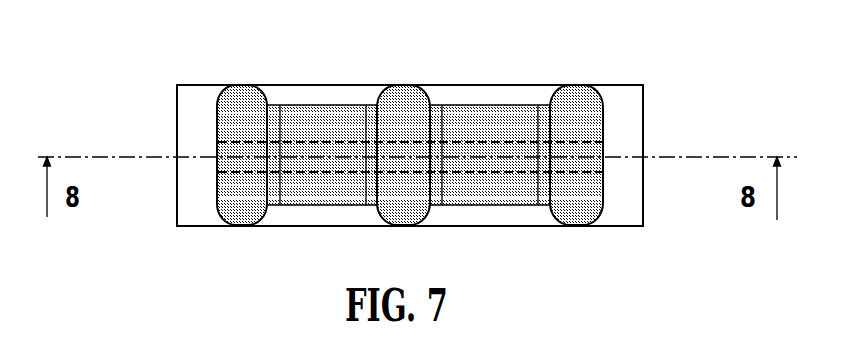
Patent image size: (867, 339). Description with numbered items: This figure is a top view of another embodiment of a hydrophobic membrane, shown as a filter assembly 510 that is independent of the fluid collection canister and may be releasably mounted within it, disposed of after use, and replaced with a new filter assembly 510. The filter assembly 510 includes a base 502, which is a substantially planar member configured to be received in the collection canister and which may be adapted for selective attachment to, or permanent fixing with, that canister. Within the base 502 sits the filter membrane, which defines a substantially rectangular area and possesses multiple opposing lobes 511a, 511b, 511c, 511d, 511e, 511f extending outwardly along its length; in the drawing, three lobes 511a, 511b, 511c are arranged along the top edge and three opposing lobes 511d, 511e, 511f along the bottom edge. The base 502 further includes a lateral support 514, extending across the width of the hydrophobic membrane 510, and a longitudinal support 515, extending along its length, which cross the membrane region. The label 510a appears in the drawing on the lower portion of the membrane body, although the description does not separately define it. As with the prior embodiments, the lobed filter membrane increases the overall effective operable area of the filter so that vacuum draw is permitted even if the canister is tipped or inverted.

The base 502 is at (645, 102).
The filter assembly 510 is at (325, 98).
The core body 510a is at (300, 206).
The lobe 511a is at (237, 92).
The lobe 511b is at (401, 93).
The lobe 511c is at (578, 87).
The lobe 511d is at (237, 223).
The lobe 511e is at (402, 227).
The lobe 511f is at (578, 222).
The lateral support 514 is at (442, 118).
The longitudinal support 515 is at (485, 173).